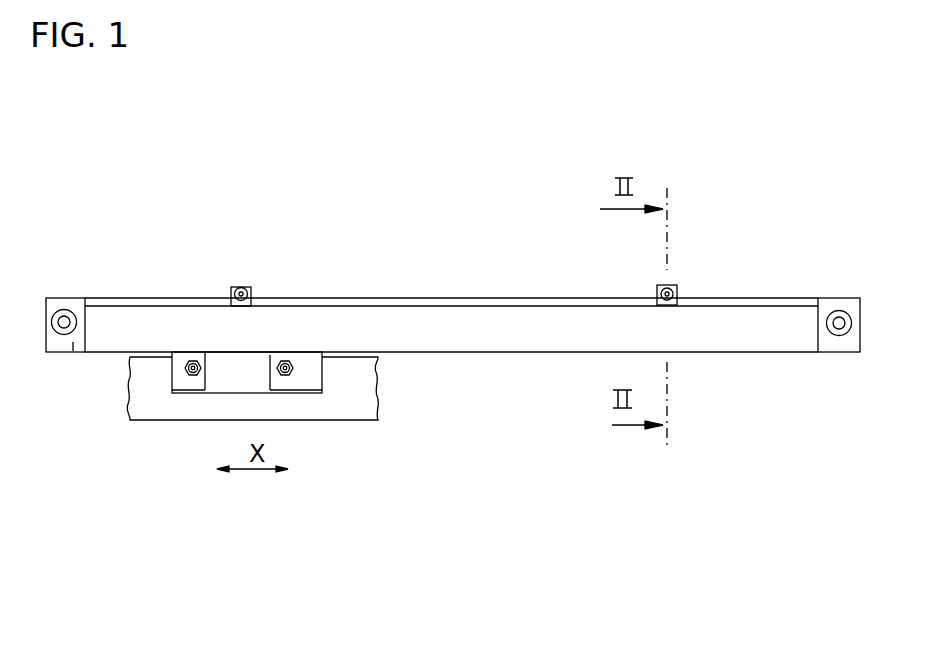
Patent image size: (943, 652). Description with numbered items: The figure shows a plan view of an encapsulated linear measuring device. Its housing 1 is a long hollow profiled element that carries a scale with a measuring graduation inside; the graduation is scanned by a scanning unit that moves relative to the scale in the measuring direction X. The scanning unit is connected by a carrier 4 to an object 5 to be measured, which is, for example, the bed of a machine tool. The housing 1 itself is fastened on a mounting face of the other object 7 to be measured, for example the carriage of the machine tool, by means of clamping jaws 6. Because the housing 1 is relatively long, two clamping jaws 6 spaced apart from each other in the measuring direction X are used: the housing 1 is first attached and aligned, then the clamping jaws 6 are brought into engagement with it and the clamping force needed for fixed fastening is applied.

The housing 1 is at (527, 333).
The carrier 4 is at (313, 385).
The object to be measured 5 is at (155, 410).
The clamping jaw 6 is at (251, 297).
The other object to be measured 7 is at (473, 245).